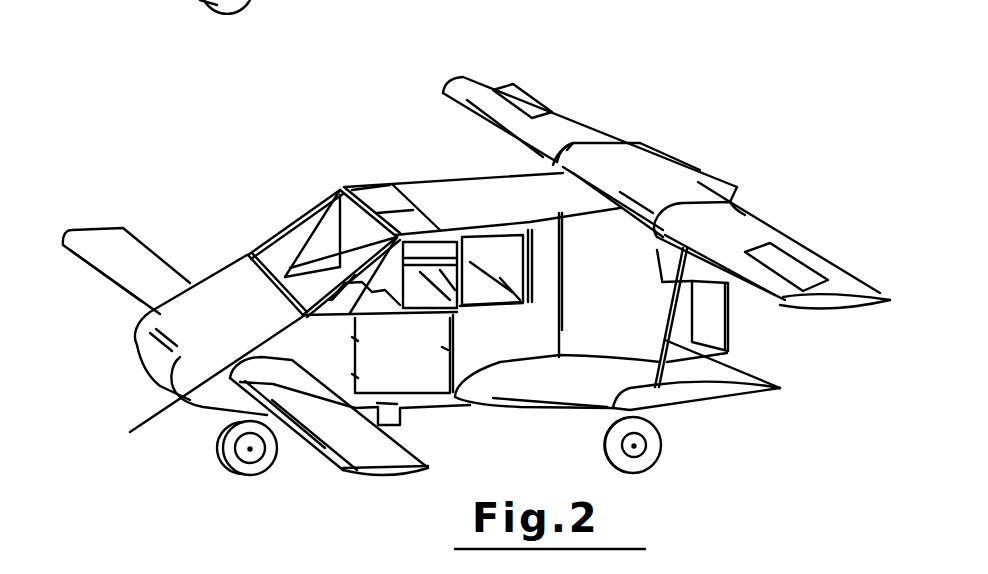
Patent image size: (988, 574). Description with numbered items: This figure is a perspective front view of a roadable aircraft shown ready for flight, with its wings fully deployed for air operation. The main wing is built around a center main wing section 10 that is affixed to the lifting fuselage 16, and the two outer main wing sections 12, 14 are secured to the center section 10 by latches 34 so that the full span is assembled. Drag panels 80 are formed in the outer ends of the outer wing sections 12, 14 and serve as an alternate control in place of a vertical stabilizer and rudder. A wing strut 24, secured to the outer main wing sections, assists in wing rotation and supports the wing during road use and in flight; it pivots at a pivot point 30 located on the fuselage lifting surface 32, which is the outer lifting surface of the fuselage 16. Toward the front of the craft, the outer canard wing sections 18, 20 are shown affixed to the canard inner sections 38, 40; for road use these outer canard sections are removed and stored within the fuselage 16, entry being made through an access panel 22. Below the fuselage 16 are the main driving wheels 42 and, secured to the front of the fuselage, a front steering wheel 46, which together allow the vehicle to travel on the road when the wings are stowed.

The center main wing section 10 is at (667, 190).
The outer main wing section 12 is at (725, 230).
The outer main wing section 14 is at (568, 150).
The fuselage 16 is at (492, 343).
The outer canard wing section 18 is at (337, 432).
The outer canard wing section 20 is at (133, 255).
The access panel 22 is at (712, 315).
The wing strut 24 is at (692, 352).
The pivot point 30 is at (657, 387).
The fuselage lifting surface 32 is at (637, 143).
The latch 34 is at (553, 165).
The canard inner section 38 is at (196, 355).
The canard inner section 40 is at (150, 307).
The main driving wheel 42 is at (647, 457).
The front steering wheel 46 is at (227, 465).
The drag panel 80 is at (530, 103).